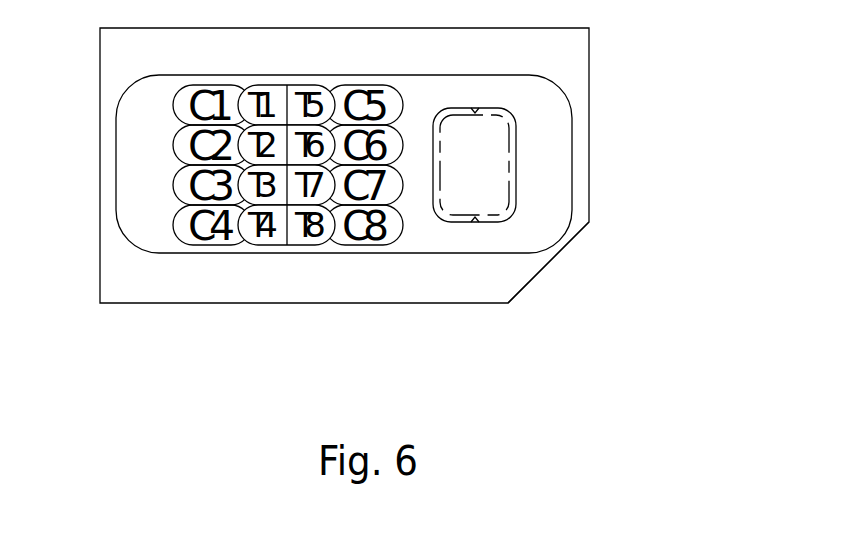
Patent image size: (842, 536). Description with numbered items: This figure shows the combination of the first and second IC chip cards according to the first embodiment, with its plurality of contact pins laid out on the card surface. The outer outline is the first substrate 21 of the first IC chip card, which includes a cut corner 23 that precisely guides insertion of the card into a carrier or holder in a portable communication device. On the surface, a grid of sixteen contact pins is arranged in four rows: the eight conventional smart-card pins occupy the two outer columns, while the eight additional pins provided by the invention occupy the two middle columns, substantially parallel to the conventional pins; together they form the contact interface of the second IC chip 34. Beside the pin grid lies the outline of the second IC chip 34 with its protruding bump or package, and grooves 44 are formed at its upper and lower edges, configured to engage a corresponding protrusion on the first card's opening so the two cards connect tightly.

The first substrate 21 is at (549, 60).
The second IC chip 34 is at (495, 160).
The groove 44 is at (475, 224).
The cut corner 23 is at (538, 273).